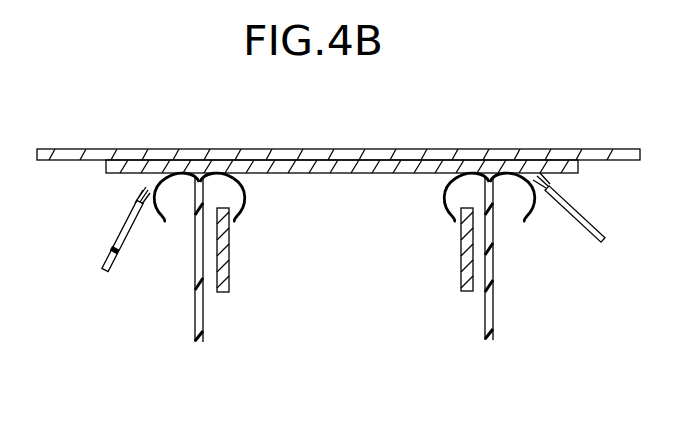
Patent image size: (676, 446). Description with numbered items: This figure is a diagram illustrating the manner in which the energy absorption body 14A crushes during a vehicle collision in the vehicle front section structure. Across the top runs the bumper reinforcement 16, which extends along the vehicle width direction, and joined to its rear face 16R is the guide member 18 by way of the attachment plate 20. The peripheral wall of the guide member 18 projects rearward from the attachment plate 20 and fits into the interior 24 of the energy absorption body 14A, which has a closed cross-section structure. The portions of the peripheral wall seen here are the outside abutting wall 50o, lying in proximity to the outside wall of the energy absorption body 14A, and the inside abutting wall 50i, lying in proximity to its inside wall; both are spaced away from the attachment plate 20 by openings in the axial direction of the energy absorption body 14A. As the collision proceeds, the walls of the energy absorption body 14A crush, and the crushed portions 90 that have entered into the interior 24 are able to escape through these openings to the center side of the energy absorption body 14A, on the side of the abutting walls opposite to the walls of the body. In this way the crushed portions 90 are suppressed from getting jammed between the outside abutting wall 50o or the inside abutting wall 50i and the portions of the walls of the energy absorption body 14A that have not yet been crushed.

The rear face 16R is at (327, 152).
The bumper reinforcement 16 is at (338, 118).
The attachment plate 20 is at (320, 174).
The crushed portions 90 is at (161, 223).
The energy absorption body 14A is at (494, 311).
The outside abutting wall 50o is at (229, 288).
The inside abutting wall 50i is at (460, 274).
The guide member 18 is at (366, 252).
The interior 24 is at (327, 325).